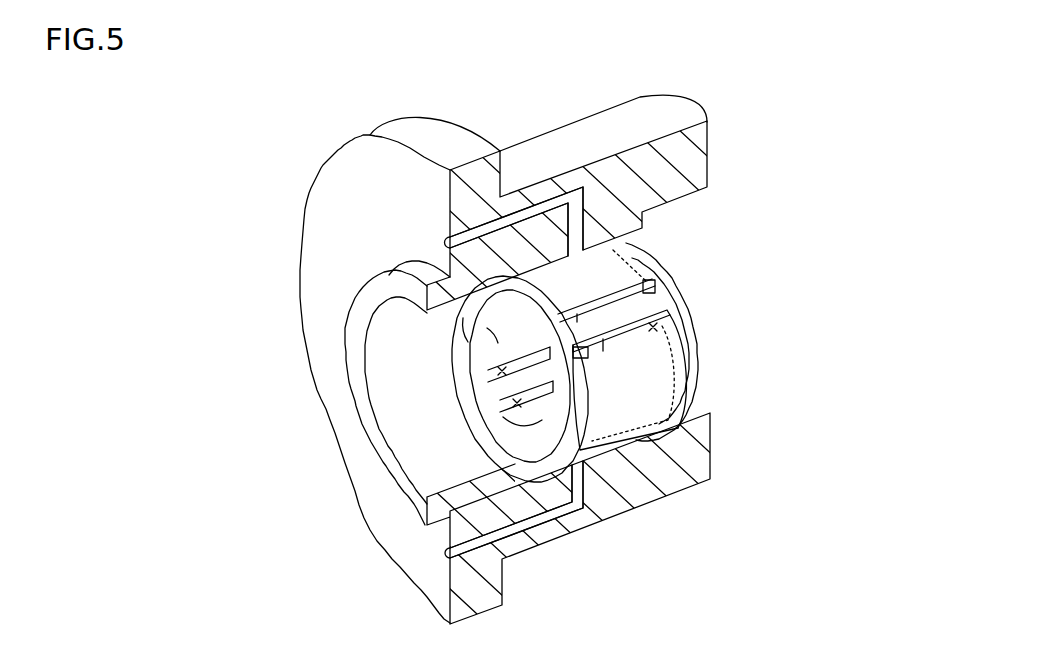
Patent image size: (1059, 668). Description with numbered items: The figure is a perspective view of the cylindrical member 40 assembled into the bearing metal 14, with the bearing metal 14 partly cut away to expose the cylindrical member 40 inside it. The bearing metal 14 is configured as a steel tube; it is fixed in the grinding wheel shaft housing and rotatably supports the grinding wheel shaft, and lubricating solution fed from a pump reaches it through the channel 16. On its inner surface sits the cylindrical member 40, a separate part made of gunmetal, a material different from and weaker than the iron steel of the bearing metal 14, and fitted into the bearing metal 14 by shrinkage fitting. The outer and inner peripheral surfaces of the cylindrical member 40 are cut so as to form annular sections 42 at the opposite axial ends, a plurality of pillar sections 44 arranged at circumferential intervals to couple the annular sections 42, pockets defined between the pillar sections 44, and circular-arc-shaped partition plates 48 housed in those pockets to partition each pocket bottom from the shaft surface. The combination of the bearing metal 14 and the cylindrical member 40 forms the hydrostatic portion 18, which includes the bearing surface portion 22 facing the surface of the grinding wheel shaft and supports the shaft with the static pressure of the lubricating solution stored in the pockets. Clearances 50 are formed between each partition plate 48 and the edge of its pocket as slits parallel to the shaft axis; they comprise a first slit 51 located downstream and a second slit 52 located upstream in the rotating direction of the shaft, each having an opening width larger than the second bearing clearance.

The bearing metal 14 is at (679, 158).
The channel 16 is at (541, 212).
The hydrostatic portion 18 is at (511, 374).
The bearing surface portion 22 is at (540, 393).
The cylindrical member 40 is at (511, 374).
The annular sections 42 is at (452, 350).
The pillar sections 44 is at (650, 310).
The partition plates 48 is at (612, 265).
The clearances 50 is at (515, 372).
The first slit 51 is at (658, 322).
The second slit 52 is at (653, 292).